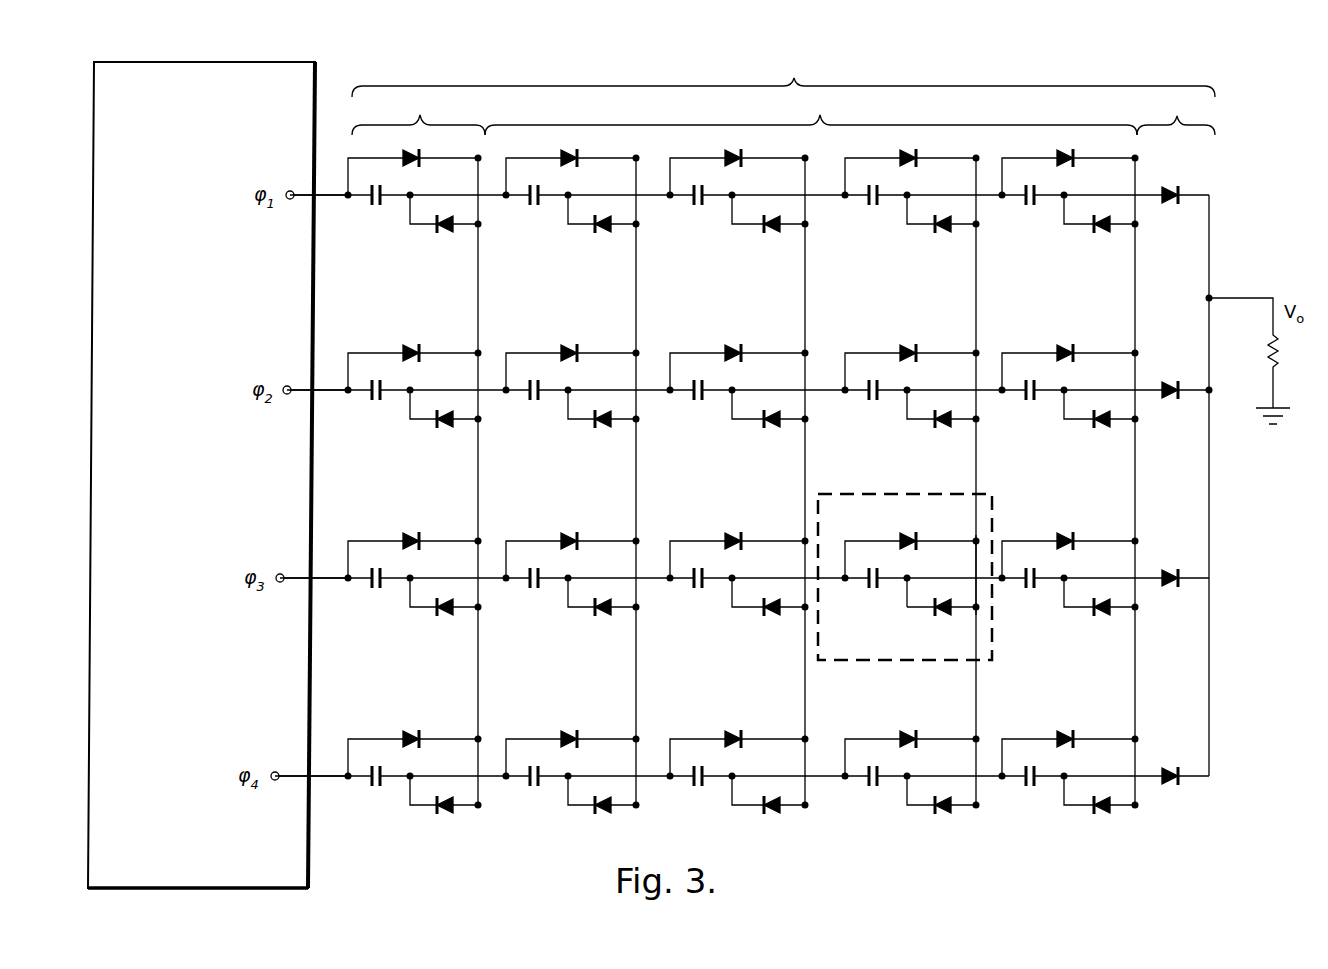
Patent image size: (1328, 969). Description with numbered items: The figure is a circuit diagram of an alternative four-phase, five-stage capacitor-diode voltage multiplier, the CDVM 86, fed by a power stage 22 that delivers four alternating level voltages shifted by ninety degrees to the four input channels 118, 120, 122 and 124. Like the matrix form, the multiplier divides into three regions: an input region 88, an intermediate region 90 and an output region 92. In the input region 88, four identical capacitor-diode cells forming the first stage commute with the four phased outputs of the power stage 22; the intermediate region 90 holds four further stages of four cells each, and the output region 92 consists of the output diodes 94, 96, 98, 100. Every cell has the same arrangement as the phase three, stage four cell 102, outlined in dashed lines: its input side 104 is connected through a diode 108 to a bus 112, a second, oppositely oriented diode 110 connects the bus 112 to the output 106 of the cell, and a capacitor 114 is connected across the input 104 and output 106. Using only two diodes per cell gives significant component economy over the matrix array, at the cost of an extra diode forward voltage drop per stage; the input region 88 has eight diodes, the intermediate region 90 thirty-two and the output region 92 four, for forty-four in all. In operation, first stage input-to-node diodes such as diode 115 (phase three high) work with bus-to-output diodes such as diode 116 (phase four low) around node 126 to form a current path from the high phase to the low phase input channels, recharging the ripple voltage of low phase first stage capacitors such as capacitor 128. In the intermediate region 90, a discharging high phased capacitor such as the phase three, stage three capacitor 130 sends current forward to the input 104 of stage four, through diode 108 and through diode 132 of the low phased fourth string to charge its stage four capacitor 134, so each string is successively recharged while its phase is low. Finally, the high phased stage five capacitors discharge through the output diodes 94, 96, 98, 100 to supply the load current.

The power stage 22 is at (313, 67).
The CDVM 86 is at (783, 77).
The input region 88 is at (418, 113).
The intermediate region 90 is at (811, 113).
The output region 92 is at (1176, 115).
The output diode 94 is at (1172, 192).
The output diode 96 is at (1171, 386).
The output diode 98 is at (1170, 574).
The output diode 100 is at (1168, 770).
The cell 102 is at (993, 500).
The input side 104 is at (835, 583).
The output 106 is at (893, 580).
The diode 108 is at (907, 536).
The diode 110 is at (946, 614).
The bus 112 is at (978, 554).
The capacitor 114 is at (880, 592).
The diode 115 is at (409, 534).
The diode 116 is at (450, 810).
The input channel 118 is at (316, 199).
The input channel 120 is at (325, 394).
The input channel 122 is at (326, 582).
The input channel 124 is at (326, 780).
The node 126 is at (478, 505).
The capacitor 128 is at (380, 786).
The capacitor 130 is at (690, 590).
The diode 132 is at (944, 810).
The capacitor 134 is at (868, 784).